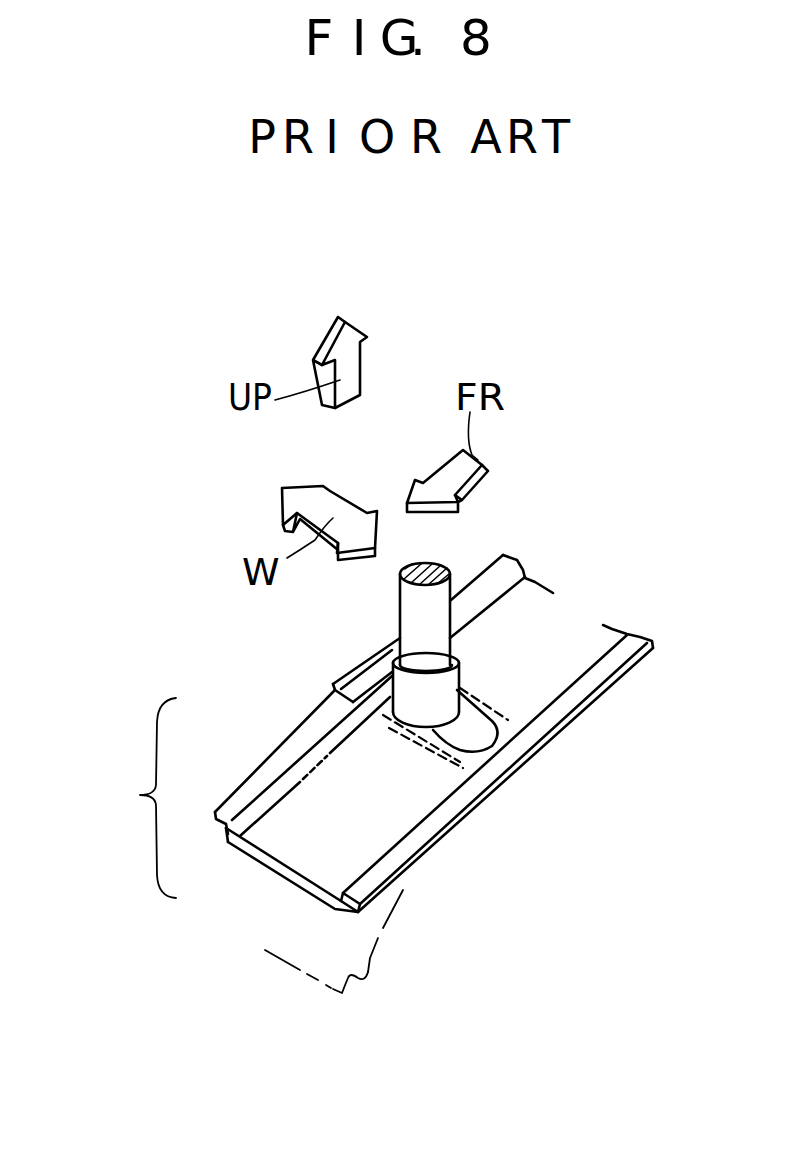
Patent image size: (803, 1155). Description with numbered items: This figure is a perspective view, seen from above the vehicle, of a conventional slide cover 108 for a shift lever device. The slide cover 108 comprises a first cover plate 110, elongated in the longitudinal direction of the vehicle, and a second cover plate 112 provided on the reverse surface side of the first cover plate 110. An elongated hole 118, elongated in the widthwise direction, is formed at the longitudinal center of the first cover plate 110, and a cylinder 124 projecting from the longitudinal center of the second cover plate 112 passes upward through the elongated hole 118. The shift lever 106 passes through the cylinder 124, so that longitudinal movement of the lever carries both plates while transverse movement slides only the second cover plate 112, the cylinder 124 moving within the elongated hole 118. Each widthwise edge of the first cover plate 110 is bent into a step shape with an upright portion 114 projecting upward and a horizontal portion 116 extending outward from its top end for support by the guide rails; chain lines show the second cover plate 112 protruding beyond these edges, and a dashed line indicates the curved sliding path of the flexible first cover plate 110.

The shift lever 106 is at (412, 612).
The slide cover 108 is at (119, 798).
The first cover plate 110 is at (262, 870).
The second cover plate 112 is at (355, 663).
The upright portion 114 is at (277, 797).
The horizontal portion 116 is at (314, 739).
The elongated hole 118 is at (493, 740).
The cylinder 124 is at (455, 680).